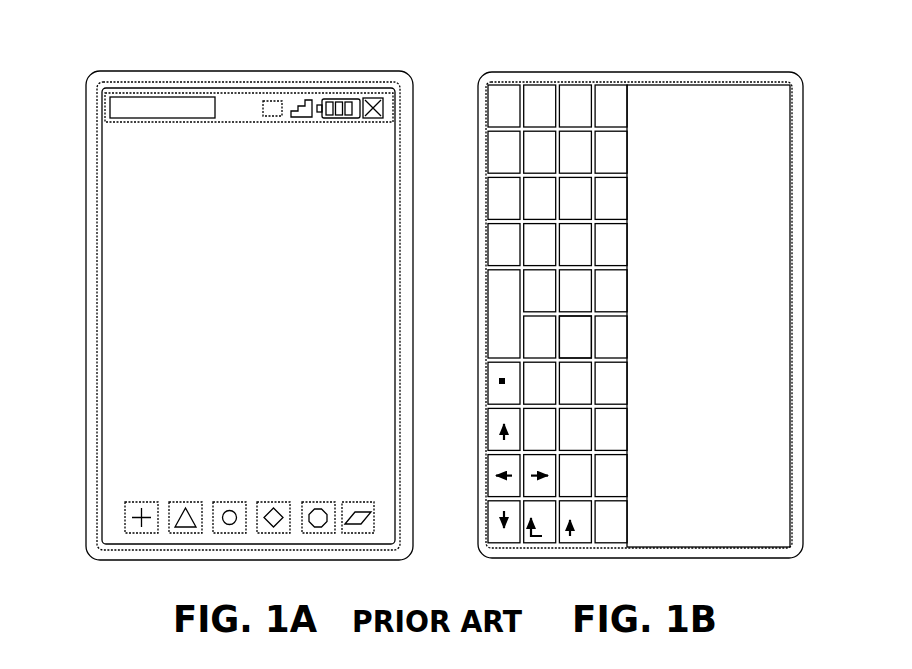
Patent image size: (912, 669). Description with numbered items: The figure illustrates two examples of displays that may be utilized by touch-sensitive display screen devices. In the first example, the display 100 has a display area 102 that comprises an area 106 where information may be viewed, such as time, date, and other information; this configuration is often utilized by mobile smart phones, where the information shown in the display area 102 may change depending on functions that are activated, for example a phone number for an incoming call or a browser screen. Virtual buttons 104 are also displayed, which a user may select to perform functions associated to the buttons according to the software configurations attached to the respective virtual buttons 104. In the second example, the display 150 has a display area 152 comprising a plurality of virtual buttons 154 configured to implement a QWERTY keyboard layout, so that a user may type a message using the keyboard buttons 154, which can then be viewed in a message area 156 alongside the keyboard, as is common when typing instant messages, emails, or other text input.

In FIG. 1A, the display 100 is at (152, 64).
In FIG. 1A, the display area 102 is at (245, 79).
In FIG. 1A, the virtual buttons 104 is at (373, 518).
In FIG. 1A, the area 106 is at (315, 277).
In FIG. 1B, the display 150 is at (722, 65).
In FIG. 1B, the display area 152 is at (608, 83).
In FIG. 1B, the virtual buttons 154 is at (558, 324).
In FIG. 1B, the message area 156 is at (723, 201).